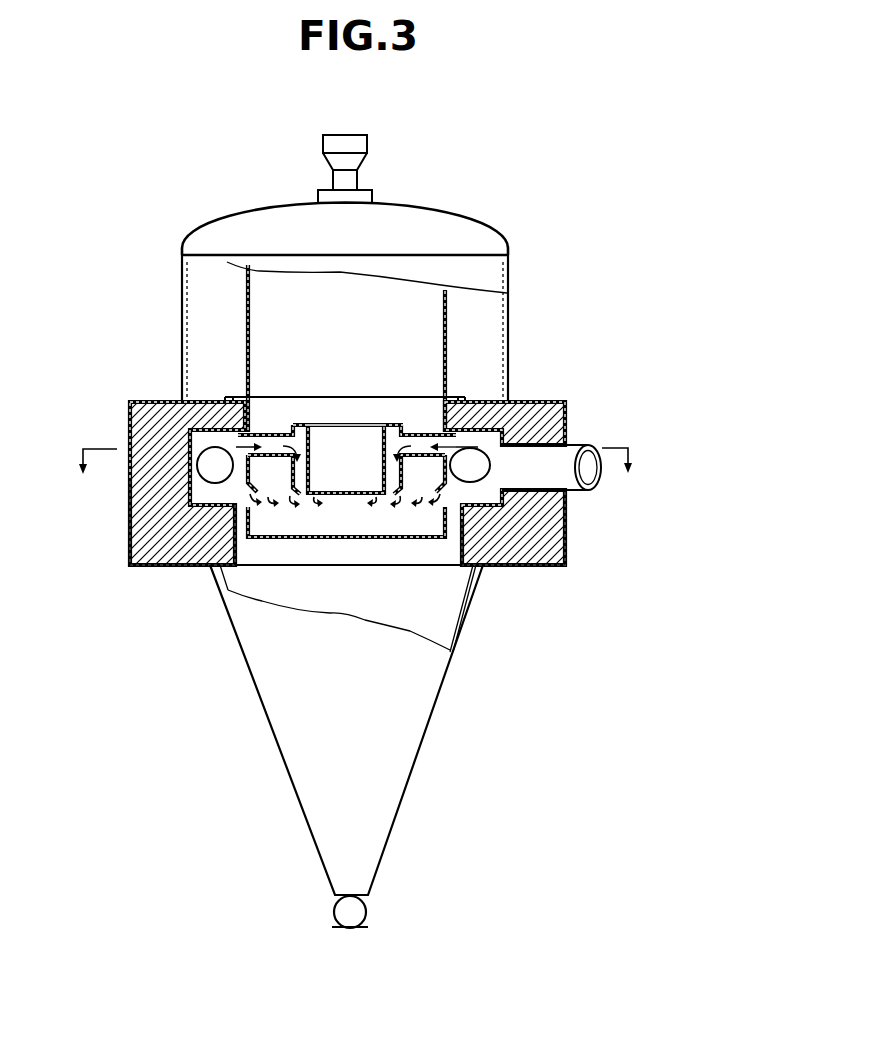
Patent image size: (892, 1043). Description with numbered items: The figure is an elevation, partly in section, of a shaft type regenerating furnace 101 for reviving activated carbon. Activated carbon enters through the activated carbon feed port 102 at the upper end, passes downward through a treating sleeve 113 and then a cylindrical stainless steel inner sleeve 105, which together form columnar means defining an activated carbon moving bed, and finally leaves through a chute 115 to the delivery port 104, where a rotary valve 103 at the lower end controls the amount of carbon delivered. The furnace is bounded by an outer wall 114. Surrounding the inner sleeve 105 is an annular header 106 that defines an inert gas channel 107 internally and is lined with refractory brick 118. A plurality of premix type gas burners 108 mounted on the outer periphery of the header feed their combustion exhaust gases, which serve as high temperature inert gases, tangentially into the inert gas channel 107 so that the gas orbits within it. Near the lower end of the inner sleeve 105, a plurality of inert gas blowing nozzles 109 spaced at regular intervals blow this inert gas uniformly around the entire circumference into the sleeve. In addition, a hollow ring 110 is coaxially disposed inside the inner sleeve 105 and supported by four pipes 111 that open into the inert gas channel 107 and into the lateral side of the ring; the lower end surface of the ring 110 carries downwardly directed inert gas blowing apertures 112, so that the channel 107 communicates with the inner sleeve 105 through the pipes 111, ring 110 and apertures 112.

The regenerating furnace 101 is at (477, 226).
The activated carbon feed port 102 is at (358, 143).
The rotary valve 103 is at (355, 912).
The delivery port 104 is at (343, 930).
The inner sleeve 105 is at (370, 397).
The annular header 106 is at (187, 410).
The inert gas channel 107 is at (212, 495).
The gas burner 108 is at (538, 457).
The inert gas blowing nozzle 109 is at (253, 508).
The hollow ring 110 is at (337, 427).
The pipe 111 is at (272, 427).
The inert gas blowing aperture 112 is at (302, 508).
The treating sleeve 113 is at (449, 323).
The outer wall 114 is at (183, 300).
The chute 115 is at (293, 738).
The refractory brick 118 is at (150, 505).